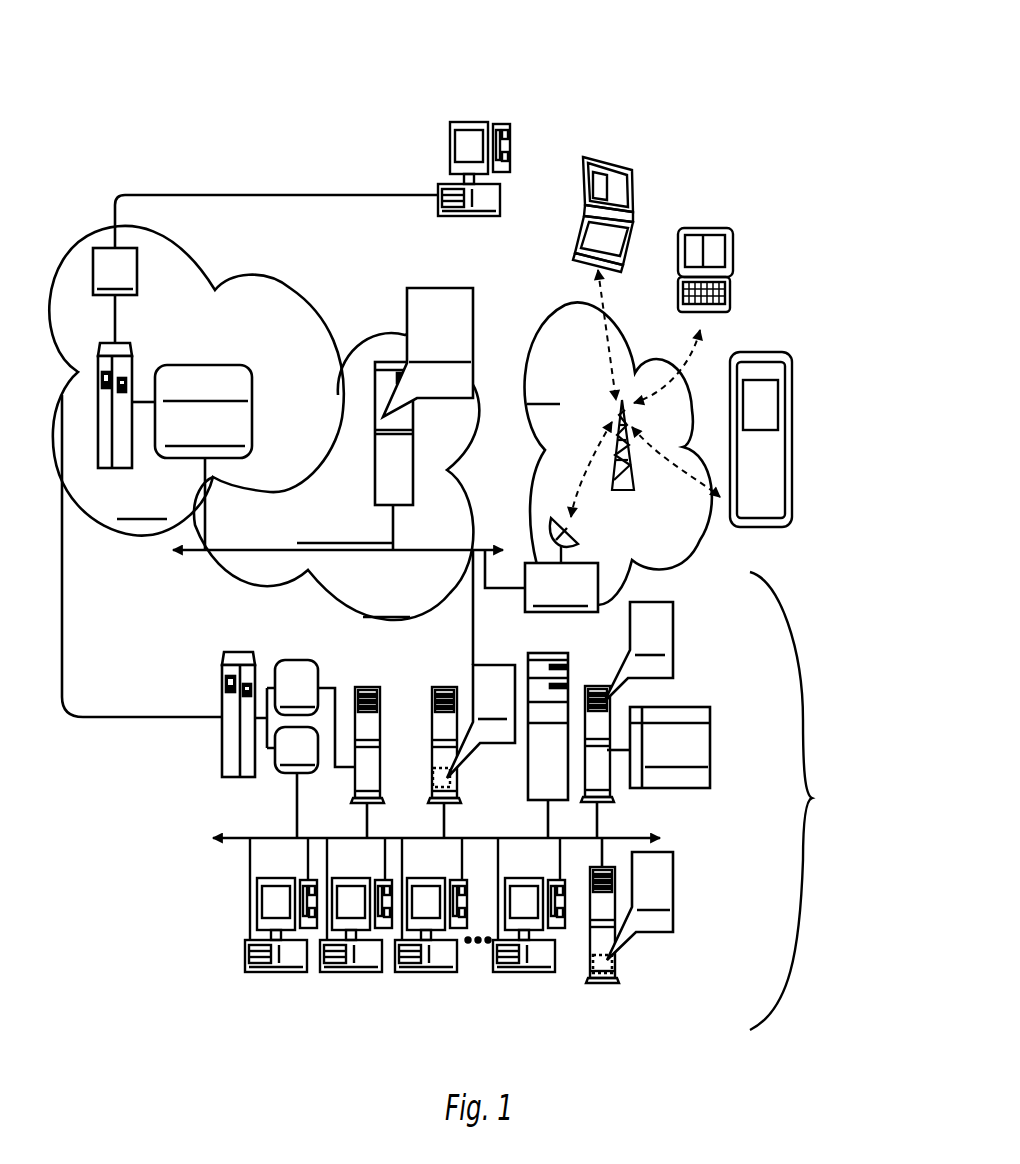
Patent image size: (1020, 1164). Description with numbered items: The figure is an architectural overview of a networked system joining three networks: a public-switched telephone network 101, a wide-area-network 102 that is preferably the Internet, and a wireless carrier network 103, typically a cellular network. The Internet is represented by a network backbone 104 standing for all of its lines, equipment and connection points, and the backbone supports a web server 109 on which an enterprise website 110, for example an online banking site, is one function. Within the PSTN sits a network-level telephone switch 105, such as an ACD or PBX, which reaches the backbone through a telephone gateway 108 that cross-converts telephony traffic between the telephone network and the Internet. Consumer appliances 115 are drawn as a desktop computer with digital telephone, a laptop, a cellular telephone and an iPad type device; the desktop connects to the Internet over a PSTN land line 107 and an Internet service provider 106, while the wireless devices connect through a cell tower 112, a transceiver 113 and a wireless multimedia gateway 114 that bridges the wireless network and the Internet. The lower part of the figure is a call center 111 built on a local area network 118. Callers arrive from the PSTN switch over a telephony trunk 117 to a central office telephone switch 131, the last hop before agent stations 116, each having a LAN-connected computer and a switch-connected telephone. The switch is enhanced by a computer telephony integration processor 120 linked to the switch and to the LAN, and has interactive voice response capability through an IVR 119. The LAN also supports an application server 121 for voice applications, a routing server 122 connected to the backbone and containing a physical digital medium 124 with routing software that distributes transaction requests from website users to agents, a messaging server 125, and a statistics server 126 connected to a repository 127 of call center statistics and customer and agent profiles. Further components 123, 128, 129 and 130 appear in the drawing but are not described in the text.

The public-switched telephone network 101 is at (216, 283).
The wide-area-network 102 is at (360, 327).
The wireless carrier network 103 is at (520, 347).
The network backbone 104 is at (267, 548).
The network-level telephone switch 105 is at (133, 367).
The Internet service provider 106 is at (93, 270).
The PSTN land line 107 is at (305, 193).
The telephone gateway 108 is at (253, 392).
The web server 109 is at (375, 437).
The website 110 is at (443, 287).
The call center 111 is at (798, 801).
The cell tower 112 is at (636, 458).
The transceiver 113 is at (578, 540).
The wireless multimedia gateway 114 is at (525, 572).
The consumer appliances 115 is at (480, 108).
The agent stations 116 is at (213, 940).
The telephony trunk 117 is at (63, 588).
The local area network 118 is at (238, 830).
The interactive voice response 119 is at (297, 660).
The computer telephony integration processor 120 is at (290, 777).
The application server 121 is at (380, 728).
The routing server 122 is at (432, 742).
The routing software 123 is at (473, 690).
The physical digital medium 124 is at (452, 777).
The messaging server 125 is at (527, 660).
The statistics server 126 is at (597, 683).
The repository 127 is at (673, 788).
The activity monitor software 128 is at (674, 638).
The supervisor software 129 is at (677, 888).
The supervisor server 130 is at (613, 967).
The central office telephone switch 131 is at (222, 707).